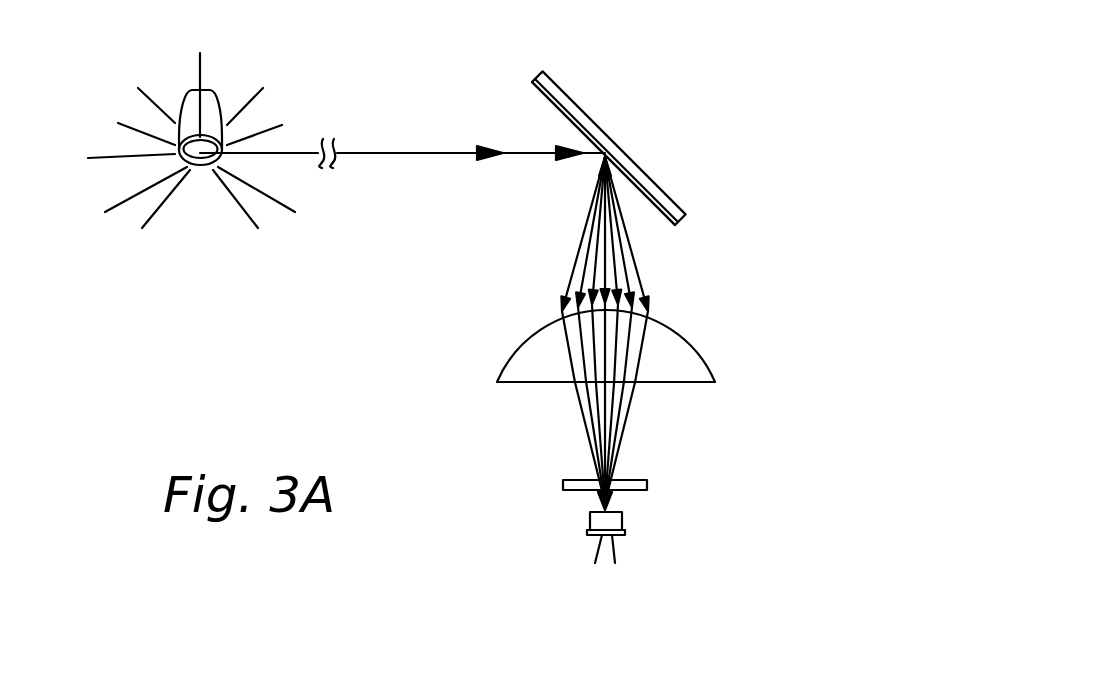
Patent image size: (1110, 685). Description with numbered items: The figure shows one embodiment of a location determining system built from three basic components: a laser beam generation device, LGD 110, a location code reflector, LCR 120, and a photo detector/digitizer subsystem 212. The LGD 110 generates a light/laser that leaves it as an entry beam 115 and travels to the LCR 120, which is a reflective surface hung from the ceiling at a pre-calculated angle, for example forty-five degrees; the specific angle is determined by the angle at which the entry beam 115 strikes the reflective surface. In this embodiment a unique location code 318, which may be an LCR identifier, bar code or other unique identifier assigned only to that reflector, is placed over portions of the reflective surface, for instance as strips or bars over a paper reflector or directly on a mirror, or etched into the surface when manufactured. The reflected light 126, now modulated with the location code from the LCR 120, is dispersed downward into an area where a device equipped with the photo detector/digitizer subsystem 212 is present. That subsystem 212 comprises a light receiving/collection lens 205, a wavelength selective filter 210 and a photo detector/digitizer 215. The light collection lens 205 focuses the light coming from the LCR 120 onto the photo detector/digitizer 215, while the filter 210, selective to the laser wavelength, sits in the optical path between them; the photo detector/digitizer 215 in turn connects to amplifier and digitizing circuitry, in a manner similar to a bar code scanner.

The laser beam generation device (LGD) 110 is at (190, 105).
The entry beam 115 is at (388, 154).
The location code reflector (LCR) 120 is at (629, 146).
The location code 318 is at (547, 103).
The reflected light 126 is at (573, 268).
The light collection lens 205 is at (503, 361).
The wavelength selective filter 210 is at (563, 487).
The photo detector/digitizer 215 is at (590, 517).
The photo detector/digitizer subsystem 212 is at (596, 435).